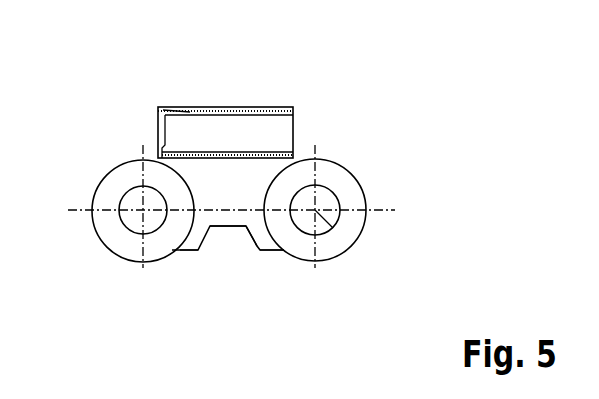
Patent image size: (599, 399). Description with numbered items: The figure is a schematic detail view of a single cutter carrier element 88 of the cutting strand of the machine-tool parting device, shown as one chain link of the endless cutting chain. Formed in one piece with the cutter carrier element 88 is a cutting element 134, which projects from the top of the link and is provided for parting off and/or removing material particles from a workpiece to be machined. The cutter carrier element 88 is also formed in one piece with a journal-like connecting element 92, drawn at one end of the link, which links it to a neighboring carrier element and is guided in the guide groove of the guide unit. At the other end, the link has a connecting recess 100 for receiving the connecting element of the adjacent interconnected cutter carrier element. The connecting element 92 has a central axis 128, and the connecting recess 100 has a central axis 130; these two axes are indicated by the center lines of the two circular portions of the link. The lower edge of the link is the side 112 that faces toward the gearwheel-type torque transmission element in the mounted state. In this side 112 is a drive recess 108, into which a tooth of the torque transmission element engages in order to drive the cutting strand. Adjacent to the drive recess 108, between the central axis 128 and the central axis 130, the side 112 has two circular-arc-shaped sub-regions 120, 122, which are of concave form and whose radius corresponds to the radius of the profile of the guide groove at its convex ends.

The cutting element 134 is at (253, 108).
The cutter carrier element 88 is at (328, 162).
The connecting recess 100 is at (333, 193).
The central axis of the connecting element 128 is at (141, 208).
The central axis of the connecting recess 130 is at (333, 228).
The connecting element 92 is at (155, 218).
The circular-arc-shaped sub-region 120 is at (185, 262).
The side facing toward the torque transmission element 112 is at (227, 262).
The drive recess 108 is at (245, 252).
The circular-arc-shaped sub-region 122 is at (283, 264).